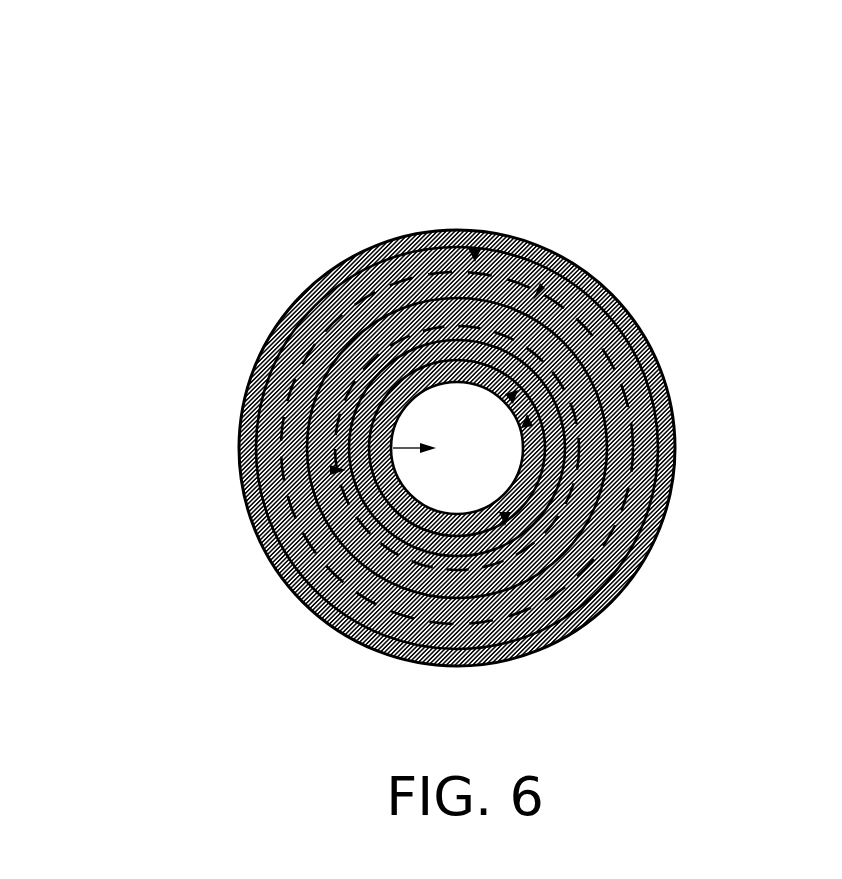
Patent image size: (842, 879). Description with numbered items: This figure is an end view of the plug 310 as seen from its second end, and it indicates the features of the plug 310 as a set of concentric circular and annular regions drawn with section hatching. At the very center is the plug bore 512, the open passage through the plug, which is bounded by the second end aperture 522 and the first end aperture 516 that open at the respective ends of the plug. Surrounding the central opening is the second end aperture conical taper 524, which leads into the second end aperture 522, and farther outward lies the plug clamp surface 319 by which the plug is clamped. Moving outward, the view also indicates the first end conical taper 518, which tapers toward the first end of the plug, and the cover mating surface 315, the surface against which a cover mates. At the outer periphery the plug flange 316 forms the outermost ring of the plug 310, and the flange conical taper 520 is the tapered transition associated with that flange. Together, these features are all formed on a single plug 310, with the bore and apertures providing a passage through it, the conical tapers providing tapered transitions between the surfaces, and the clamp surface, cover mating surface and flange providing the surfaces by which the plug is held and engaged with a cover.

The plug 310 is at (443, 85).
The cover mating surface 315 is at (488, 230).
The plug flange 316 is at (368, 235).
The plug clamp surface 319 is at (252, 517).
The plug bore 512 is at (245, 407).
The first end aperture 516 is at (658, 353).
The first end conical taper 518 is at (555, 252).
The flange conical taper 520 is at (308, 282).
The second end aperture 522 is at (640, 328).
The second end aperture conical taper 524 is at (583, 617).